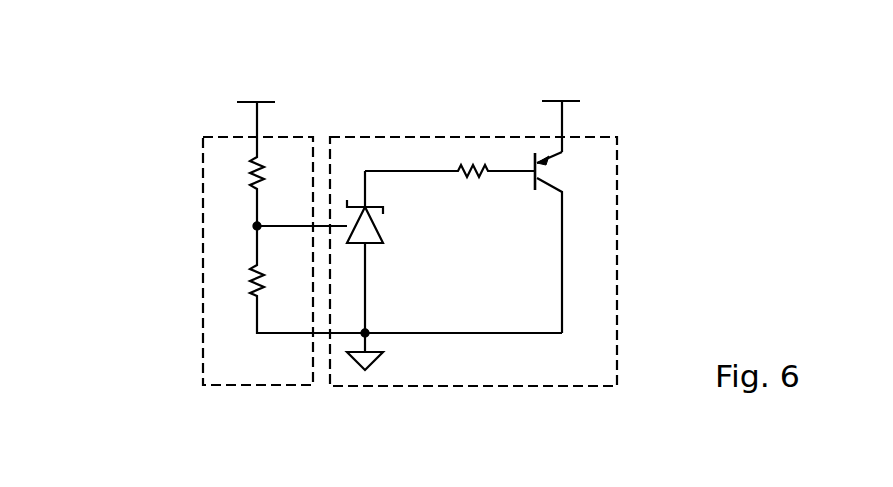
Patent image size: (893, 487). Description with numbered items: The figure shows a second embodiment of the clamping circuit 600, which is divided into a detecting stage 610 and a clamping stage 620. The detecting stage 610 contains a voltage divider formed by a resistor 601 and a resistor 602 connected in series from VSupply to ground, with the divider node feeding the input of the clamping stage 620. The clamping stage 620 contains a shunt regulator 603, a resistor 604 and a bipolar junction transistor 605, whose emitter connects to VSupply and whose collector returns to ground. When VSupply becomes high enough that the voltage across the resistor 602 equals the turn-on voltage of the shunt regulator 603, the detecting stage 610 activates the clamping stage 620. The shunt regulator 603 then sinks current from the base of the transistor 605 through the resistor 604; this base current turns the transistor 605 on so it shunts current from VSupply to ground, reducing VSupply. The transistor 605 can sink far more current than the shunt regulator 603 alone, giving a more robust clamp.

The clamping circuit 600 is at (410, 201).
The resistor 601 is at (277, 172).
The resistor 602 is at (277, 279).
The shunt regulator 603 is at (389, 252).
The resistor 604 is at (471, 186).
The bipolar junction transistor 605 is at (527, 237).
The detecting stage 610 is at (203, 242).
The clamping stage 620 is at (617, 243).